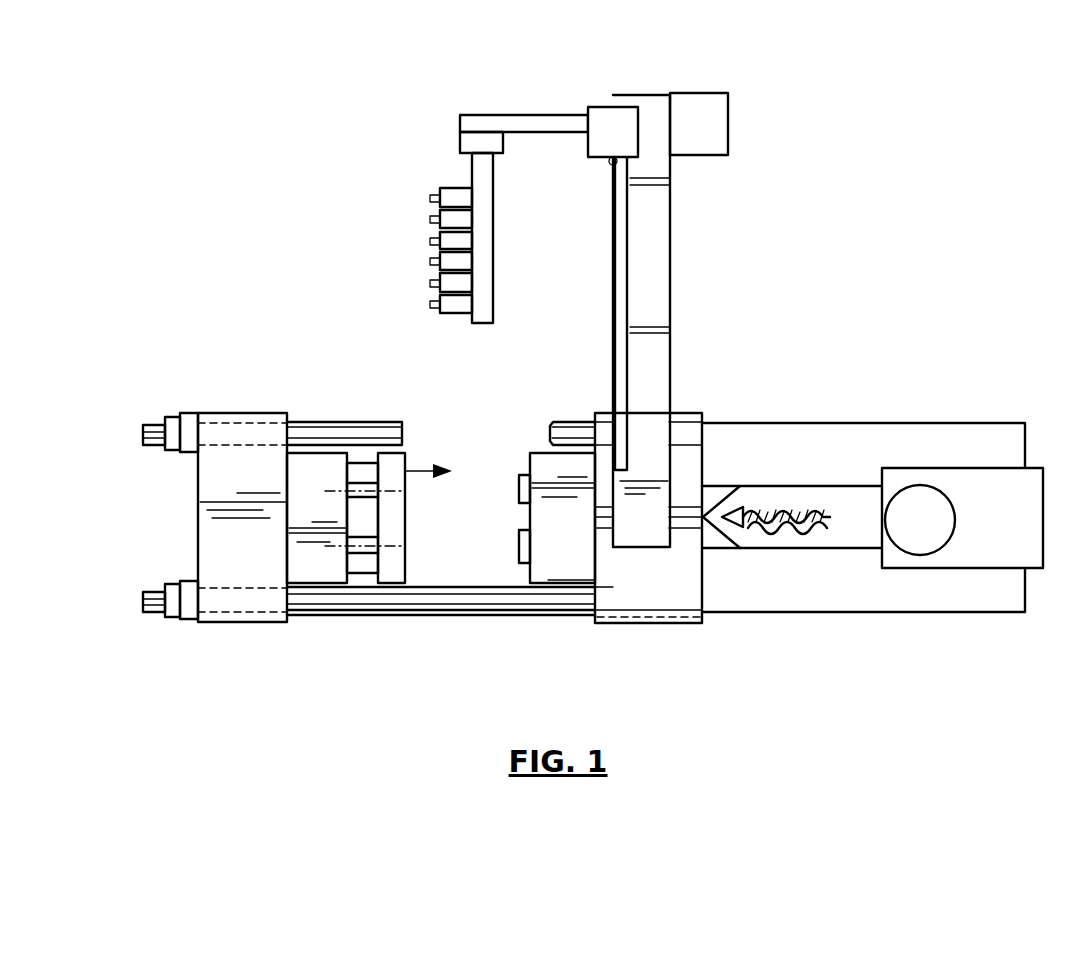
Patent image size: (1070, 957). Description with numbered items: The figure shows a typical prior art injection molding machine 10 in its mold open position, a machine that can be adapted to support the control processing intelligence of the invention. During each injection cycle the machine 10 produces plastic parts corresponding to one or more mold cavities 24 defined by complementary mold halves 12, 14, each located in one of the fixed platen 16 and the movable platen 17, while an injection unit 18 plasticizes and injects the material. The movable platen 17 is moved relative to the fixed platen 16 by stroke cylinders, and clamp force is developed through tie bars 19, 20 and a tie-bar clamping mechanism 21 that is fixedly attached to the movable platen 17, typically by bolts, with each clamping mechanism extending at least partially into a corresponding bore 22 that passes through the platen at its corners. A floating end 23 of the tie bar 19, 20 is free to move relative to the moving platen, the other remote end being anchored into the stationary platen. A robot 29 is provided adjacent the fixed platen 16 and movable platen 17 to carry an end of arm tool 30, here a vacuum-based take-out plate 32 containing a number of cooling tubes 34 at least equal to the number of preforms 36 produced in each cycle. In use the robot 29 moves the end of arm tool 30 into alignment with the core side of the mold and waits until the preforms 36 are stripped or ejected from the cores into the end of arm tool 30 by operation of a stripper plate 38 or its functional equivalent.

The injection molding machine 10 is at (232, 186).
The mold half 12 is at (541, 563).
The mold half 14 is at (322, 563).
The fixed platen 16 is at (638, 600).
The movable platen 17 is at (262, 418).
The injection unit 18 is at (828, 600).
The tie bar 19 is at (465, 604).
The tie bar 20 is at (382, 420).
The tie-bar clamping mechanism 21 is at (190, 420).
The bore 22 is at (228, 430).
The floating end 23 is at (155, 430).
The mold cavity 24 is at (521, 490).
The robot 29 is at (602, 105).
The end of arm tool 30 is at (499, 223).
The vacuum-based take-out plate 32 is at (486, 268).
The cooling tubes 34 is at (450, 188).
The preforms 36 is at (430, 305).
The stripper plate 38 is at (405, 522).